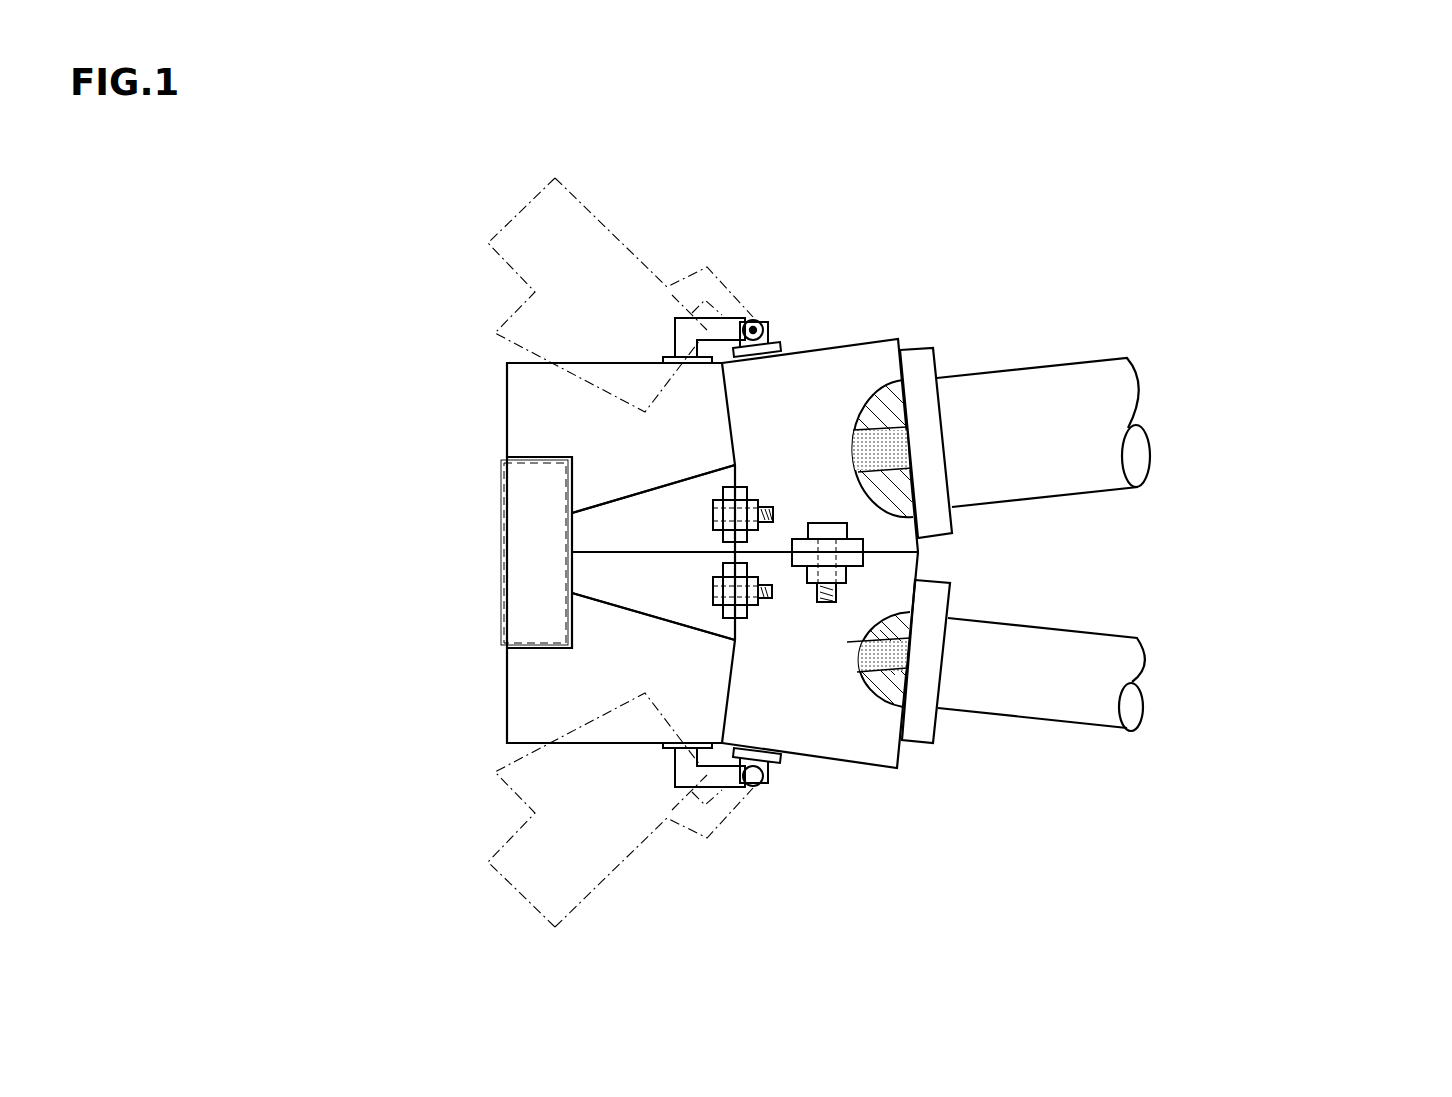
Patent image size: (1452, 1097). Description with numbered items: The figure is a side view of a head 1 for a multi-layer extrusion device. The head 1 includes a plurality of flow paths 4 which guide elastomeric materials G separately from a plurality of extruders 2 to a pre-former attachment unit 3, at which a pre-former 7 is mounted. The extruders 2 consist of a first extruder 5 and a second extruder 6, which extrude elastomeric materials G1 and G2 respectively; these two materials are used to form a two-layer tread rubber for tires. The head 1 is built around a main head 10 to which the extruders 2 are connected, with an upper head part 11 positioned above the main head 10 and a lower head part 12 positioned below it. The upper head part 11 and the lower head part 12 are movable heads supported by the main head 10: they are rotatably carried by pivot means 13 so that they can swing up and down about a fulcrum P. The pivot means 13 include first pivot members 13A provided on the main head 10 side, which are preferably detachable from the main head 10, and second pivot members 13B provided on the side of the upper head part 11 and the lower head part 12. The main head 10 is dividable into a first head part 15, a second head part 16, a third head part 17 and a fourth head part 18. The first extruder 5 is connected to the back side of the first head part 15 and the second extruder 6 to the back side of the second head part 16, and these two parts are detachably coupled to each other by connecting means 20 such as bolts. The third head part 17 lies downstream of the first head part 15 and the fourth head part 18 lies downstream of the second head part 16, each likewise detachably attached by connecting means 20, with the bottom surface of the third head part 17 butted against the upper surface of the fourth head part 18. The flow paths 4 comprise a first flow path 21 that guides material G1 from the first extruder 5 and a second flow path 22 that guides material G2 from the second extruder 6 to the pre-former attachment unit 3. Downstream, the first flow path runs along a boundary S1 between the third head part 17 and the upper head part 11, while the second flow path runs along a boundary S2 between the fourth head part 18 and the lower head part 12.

The head 1 is at (488, 395).
The extruders 2 is at (1185, 540).
The pre-former attachment unit 3 is at (535, 460).
The flow paths 4 is at (1007, 545).
The first extruder 5 is at (1080, 360).
The second extruder 6 is at (1080, 727).
The pre-former 7 is at (501, 547).
The main head 10 is at (822, 523).
The upper head part 11 is at (497, 233).
The lower head part 12 is at (537, 672).
The pivot means 13 is at (726, 452).
The first pivot members 13A is at (730, 345).
The second pivot members 13B is at (740, 347).
The first head part 15 is at (820, 380).
The second head part 16 is at (862, 737).
The third head part 17 is at (630, 523).
The fourth head part 18 is at (640, 583).
The connecting means 20 is at (718, 625).
The first flow path 21 is at (890, 458).
The second flow path 22 is at (883, 652).
The fulcrum P is at (778, 506).
The elastomeric materials G is at (1063, 542).
The elastomeric material G1 is at (883, 443).
The elastomeric material G2 is at (890, 668).
The boundary S1 is at (652, 487).
The boundary S2 is at (715, 618).